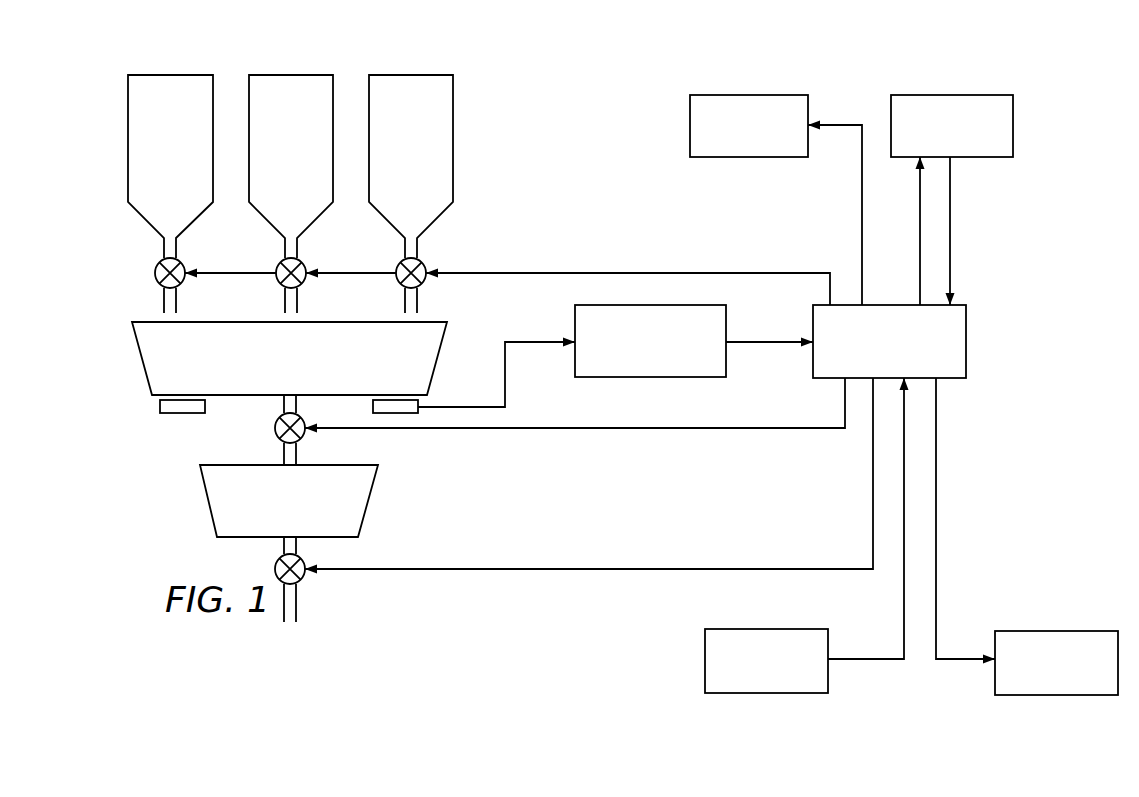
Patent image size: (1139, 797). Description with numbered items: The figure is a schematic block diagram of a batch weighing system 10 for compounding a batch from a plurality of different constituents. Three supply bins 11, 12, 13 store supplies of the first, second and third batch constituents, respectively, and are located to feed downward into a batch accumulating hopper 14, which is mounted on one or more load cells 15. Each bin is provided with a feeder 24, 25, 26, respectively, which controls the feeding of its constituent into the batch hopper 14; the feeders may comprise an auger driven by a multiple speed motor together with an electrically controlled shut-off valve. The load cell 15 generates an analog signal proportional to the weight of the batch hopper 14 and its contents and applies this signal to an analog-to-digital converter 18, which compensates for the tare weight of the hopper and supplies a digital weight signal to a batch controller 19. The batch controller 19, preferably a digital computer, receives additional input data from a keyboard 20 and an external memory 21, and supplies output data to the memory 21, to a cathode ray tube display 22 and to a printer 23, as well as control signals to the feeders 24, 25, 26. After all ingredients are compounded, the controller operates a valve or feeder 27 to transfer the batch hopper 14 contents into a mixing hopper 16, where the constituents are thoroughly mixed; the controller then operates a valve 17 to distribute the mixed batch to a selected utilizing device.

The batch weighing system 10 is at (509, 172).
The supply bin 11 is at (182, 75).
The supply bin 12 is at (305, 75).
The supply bin 13 is at (427, 75).
The batch accumulating hopper 14 is at (135, 345).
The load cell 15 is at (373, 407).
The mixing hopper 16 is at (205, 488).
The valve 17 is at (299, 581).
The analog-to-digital converter 18 is at (575, 318).
The batch controller 19 is at (966, 327).
The keyboard 20 is at (778, 629).
The external memory 21 is at (961, 95).
The cathode ray tube display 22 is at (1076, 631).
The printer 23 is at (768, 95).
The feeder 24 is at (181, 263).
The feeder 25 is at (302, 263).
The feeder 26 is at (422, 263).
The valve 27 is at (280, 438).